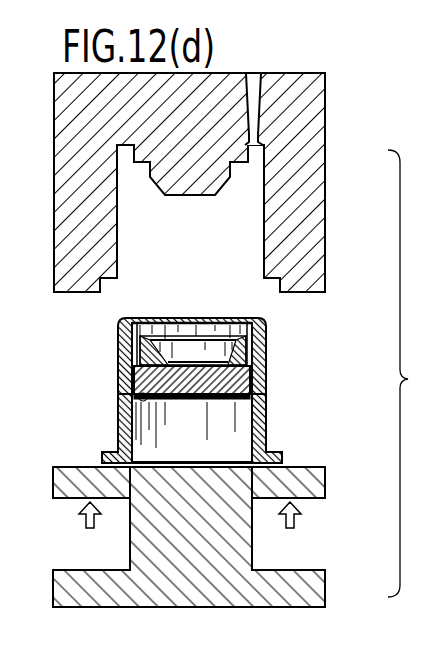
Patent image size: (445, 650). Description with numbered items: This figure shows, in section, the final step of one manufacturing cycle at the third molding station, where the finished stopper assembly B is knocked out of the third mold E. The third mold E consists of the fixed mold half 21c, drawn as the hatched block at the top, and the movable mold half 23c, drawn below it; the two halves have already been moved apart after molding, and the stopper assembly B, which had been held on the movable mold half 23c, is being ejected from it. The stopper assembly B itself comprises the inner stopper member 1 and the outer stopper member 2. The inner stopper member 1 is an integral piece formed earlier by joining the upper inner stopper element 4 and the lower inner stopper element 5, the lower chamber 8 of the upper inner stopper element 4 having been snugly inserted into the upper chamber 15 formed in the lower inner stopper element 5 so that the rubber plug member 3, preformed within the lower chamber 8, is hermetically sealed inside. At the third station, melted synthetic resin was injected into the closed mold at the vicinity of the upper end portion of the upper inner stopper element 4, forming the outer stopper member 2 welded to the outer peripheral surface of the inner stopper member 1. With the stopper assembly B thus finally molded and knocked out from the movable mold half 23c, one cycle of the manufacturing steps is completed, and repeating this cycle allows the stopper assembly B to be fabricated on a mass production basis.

The fixed mold half 21c is at (313, 160).
The movable mold half 23c is at (313, 580).
The stopper assembly B is at (204, 383).
The third mold E is at (427, 389).
The inner stopper member 1 is at (128, 348).
The outer stopper member 2 is at (266, 422).
The rubber plug member 3 is at (260, 384).
The upper inner stopper element 4 is at (268, 340).
The lower inner stopper element 5 is at (262, 412).
The lower chamber 8 is at (140, 401).
The upper chamber 15 is at (134, 372).